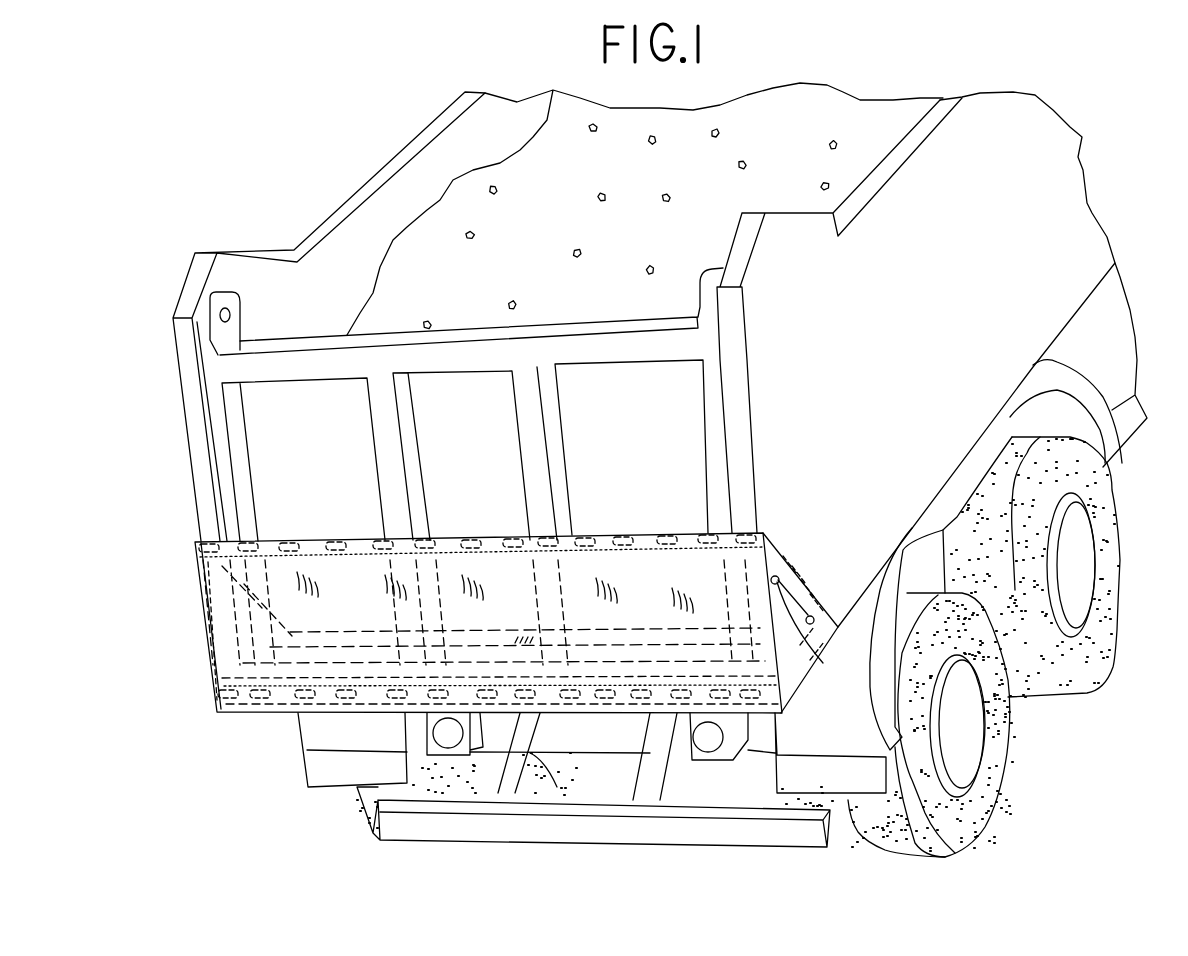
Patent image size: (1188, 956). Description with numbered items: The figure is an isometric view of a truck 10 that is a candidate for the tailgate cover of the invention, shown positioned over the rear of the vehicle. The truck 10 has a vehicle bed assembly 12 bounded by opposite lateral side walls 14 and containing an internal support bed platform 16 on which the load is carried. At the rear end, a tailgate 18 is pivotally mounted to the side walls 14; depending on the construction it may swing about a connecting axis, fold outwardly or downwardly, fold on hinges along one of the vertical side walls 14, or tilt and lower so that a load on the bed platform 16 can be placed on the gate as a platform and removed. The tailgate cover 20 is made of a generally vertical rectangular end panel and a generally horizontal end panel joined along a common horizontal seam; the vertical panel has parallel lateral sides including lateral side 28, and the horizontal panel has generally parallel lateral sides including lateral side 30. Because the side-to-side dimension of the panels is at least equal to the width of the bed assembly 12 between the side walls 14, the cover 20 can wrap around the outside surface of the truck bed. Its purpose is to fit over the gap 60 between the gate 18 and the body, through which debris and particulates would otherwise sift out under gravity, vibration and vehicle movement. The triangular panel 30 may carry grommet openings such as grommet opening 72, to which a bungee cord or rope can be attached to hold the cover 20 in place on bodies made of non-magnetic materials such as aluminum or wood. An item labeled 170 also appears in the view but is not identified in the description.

The truck 10 is at (479, 430).
The vehicle bed assembly 12 is at (861, 178).
The side walls 14 is at (832, 357).
The internal support bed platform 16 is at (873, 517).
The tailgate 18 is at (560, 326).
The tailgate cover 20 is at (205, 622).
The lateral side 28 is at (447, 543).
The lateral side 30 is at (790, 563).
The gap 60 is at (338, 675).
The grommet opening 72 is at (780, 584).
The hinge strap 170 is at (808, 657).